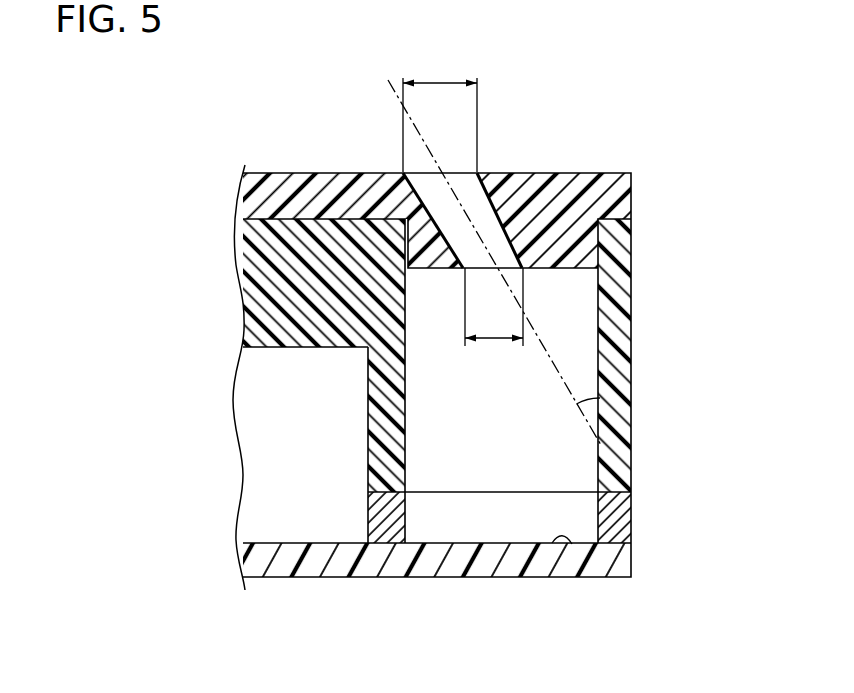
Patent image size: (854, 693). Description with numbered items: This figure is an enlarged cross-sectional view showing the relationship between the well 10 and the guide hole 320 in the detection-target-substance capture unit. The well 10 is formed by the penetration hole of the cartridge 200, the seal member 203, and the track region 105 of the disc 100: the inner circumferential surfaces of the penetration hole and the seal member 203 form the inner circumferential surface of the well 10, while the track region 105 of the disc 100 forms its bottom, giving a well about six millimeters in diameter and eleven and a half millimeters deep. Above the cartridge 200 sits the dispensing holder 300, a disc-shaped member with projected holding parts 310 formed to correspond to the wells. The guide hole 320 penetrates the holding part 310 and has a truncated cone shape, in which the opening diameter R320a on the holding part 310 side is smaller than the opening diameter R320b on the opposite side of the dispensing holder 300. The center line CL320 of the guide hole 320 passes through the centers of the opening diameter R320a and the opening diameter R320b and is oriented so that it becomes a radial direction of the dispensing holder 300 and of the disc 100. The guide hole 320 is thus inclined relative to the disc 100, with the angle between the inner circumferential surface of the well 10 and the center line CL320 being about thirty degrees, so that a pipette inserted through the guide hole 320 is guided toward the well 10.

The well 10 is at (383, 444).
The disc 100 is at (622, 567).
The track region 105 is at (572, 544).
The cartridge 200 is at (622, 340).
The seal member 203 is at (630, 508).
The dispensing holder 300 is at (628, 197).
The holding part 310 is at (578, 270).
The guide hole 320 is at (484, 185).
The center line CL320 is at (420, 136).
The first opening diameter R320a is at (494, 323).
The second opening diameter R320b is at (441, 111).